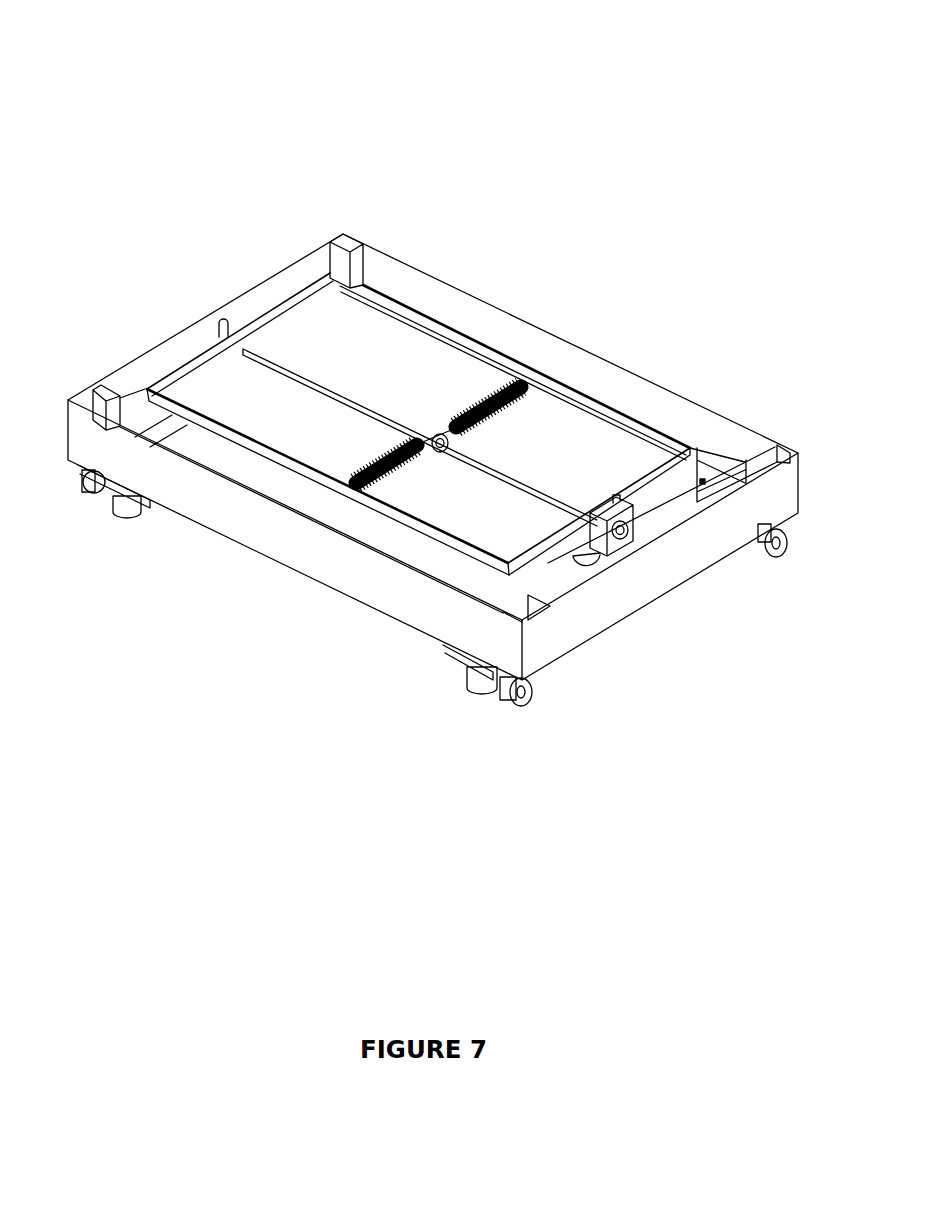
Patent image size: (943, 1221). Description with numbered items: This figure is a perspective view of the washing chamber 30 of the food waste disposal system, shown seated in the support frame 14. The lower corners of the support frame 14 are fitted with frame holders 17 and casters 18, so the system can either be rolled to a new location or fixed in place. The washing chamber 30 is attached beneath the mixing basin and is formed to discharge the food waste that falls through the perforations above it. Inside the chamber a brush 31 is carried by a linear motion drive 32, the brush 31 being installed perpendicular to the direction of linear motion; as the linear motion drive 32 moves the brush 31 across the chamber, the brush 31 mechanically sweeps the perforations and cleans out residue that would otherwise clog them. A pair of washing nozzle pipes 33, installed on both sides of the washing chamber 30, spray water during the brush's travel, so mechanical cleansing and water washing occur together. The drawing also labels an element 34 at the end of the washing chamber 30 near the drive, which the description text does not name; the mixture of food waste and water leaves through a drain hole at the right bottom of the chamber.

The support frame 14 is at (712, 474).
The frame holder 17 is at (473, 677).
The caster 18 is at (512, 707).
The washing chamber 30 is at (702, 114).
The brush 31 is at (497, 383).
The linear motion drive 32 is at (393, 420).
The washing nozzle pipe 33 is at (373, 300).
The motor support 34 is at (590, 562).